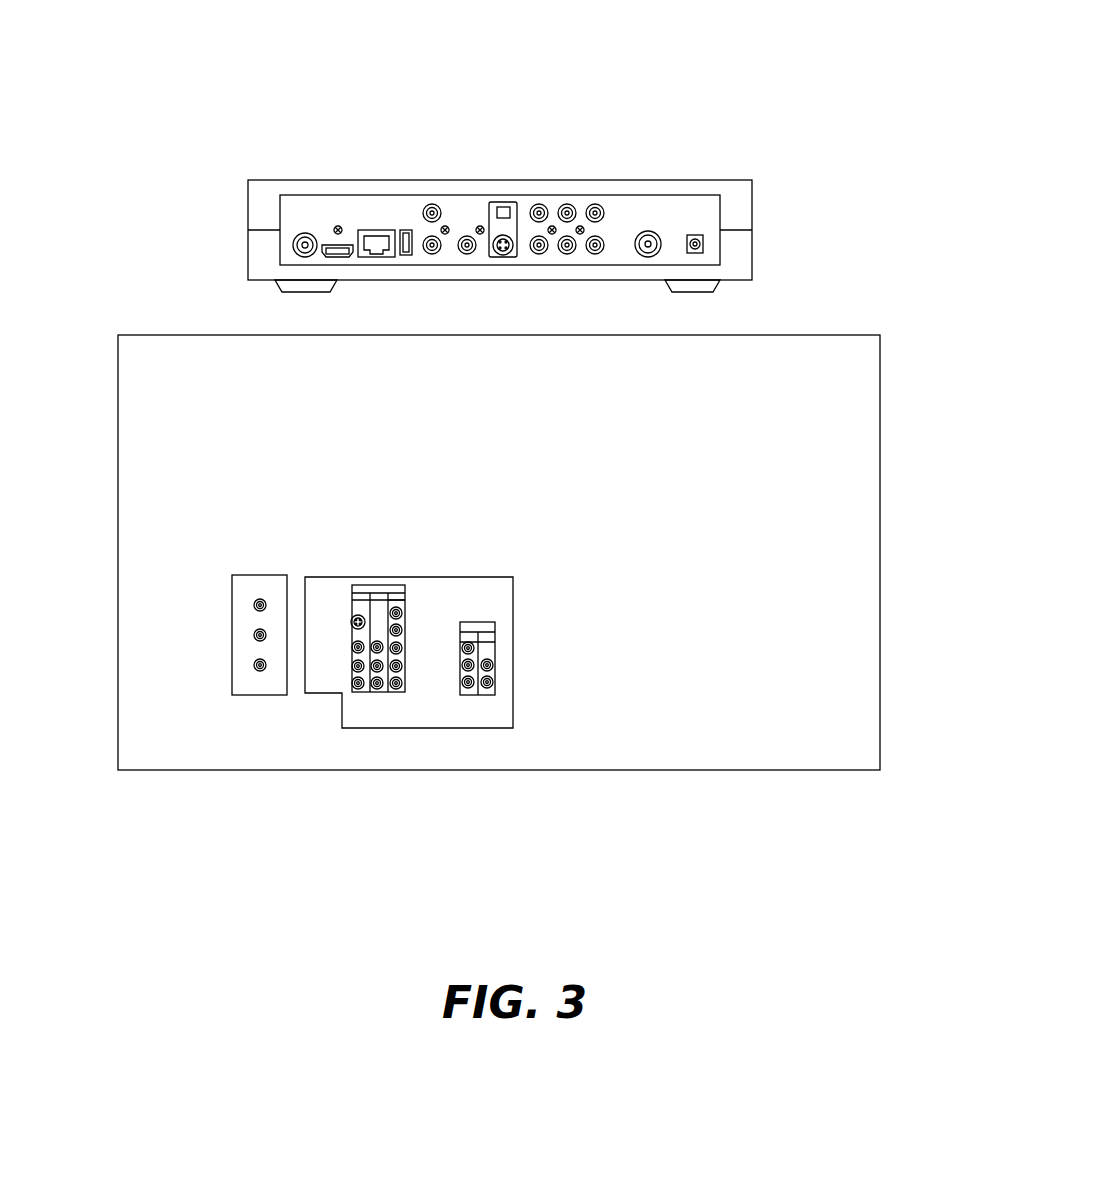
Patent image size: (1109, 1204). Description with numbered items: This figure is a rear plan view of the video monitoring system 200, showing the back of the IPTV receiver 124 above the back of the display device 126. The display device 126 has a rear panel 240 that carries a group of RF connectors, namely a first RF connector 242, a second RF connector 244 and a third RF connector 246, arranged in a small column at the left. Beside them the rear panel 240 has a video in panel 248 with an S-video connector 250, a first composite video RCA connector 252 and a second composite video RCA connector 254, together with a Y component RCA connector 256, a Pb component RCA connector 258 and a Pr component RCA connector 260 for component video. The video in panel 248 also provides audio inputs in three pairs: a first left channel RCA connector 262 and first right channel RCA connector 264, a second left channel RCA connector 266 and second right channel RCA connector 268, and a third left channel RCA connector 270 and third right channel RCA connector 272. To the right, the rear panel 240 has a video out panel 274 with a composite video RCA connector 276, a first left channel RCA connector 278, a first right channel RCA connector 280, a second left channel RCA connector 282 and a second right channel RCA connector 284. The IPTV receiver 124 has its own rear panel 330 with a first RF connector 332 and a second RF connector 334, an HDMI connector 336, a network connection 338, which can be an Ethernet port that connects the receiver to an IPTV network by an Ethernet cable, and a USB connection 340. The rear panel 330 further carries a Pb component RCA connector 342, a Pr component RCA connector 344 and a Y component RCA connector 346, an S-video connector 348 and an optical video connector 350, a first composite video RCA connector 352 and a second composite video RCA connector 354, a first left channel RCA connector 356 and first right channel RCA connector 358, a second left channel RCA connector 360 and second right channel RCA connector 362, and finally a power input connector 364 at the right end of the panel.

The video system 200 is at (833, 127).
The IPTV receiver 124 is at (238, 237).
The display device 126 is at (200, 331).
The rear panel 240 is at (133, 752).
The first RF connector 242 is at (256, 601).
The second RF connector 244 is at (254, 633).
The third RF connector 246 is at (255, 669).
The video in panel 248 is at (391, 608).
The S-video connector 250 is at (355, 619).
The first composite video RCA connector 252 is at (354, 642).
The second composite video RCA connector 254 is at (374, 643).
The Y component RCA connector 256 is at (395, 609).
The Pb component RCA connector 258 is at (399, 626).
The Pr component RCA connector 260 is at (400, 644).
The first left channel RCA connector 262 is at (356, 669).
The first right channel RCA connector 264 is at (356, 686).
The second left channel RCA connector 266 is at (375, 669).
The second right channel RCA connector 268 is at (376, 687).
The third left channel RCA connector 270 is at (398, 688).
The third right channel RCA connector 272 is at (395, 671).
The video out panel 274 is at (494, 622).
The composite video RCA connector 276 is at (470, 644).
The first left channel RCA connector 278 is at (471, 662).
The first right channel RCA connector 280 is at (471, 686).
The second left channel RCA connector 282 is at (490, 662).
The second right channel RCA connector 284 is at (491, 686).
The rear panel 330 is at (257, 202).
The first RF connector 332 is at (296, 252).
The second RF connector 334 is at (658, 250).
The HDMI connector 336 is at (323, 244).
The network connection 338 is at (370, 250).
The USB connection 340 is at (406, 233).
The Pb component RCA connector 342 is at (428, 206).
The Pr component RCA connector 344 is at (428, 252).
The Y component RCA connector 346 is at (466, 236).
The S-video output 348 is at (500, 253).
The optical video connector 350 is at (503, 202).
The first composite video RCA connector 352 is at (543, 206).
The second composite video RCA connector 354 is at (544, 252).
The first left channel RCA connector 356 is at (573, 208).
The first right channel RCA connector 358 is at (601, 209).
The second left channel RCA connector 360 is at (572, 251).
The second right channel RCA connector 362 is at (600, 251).
The power input connector 364 is at (700, 240).